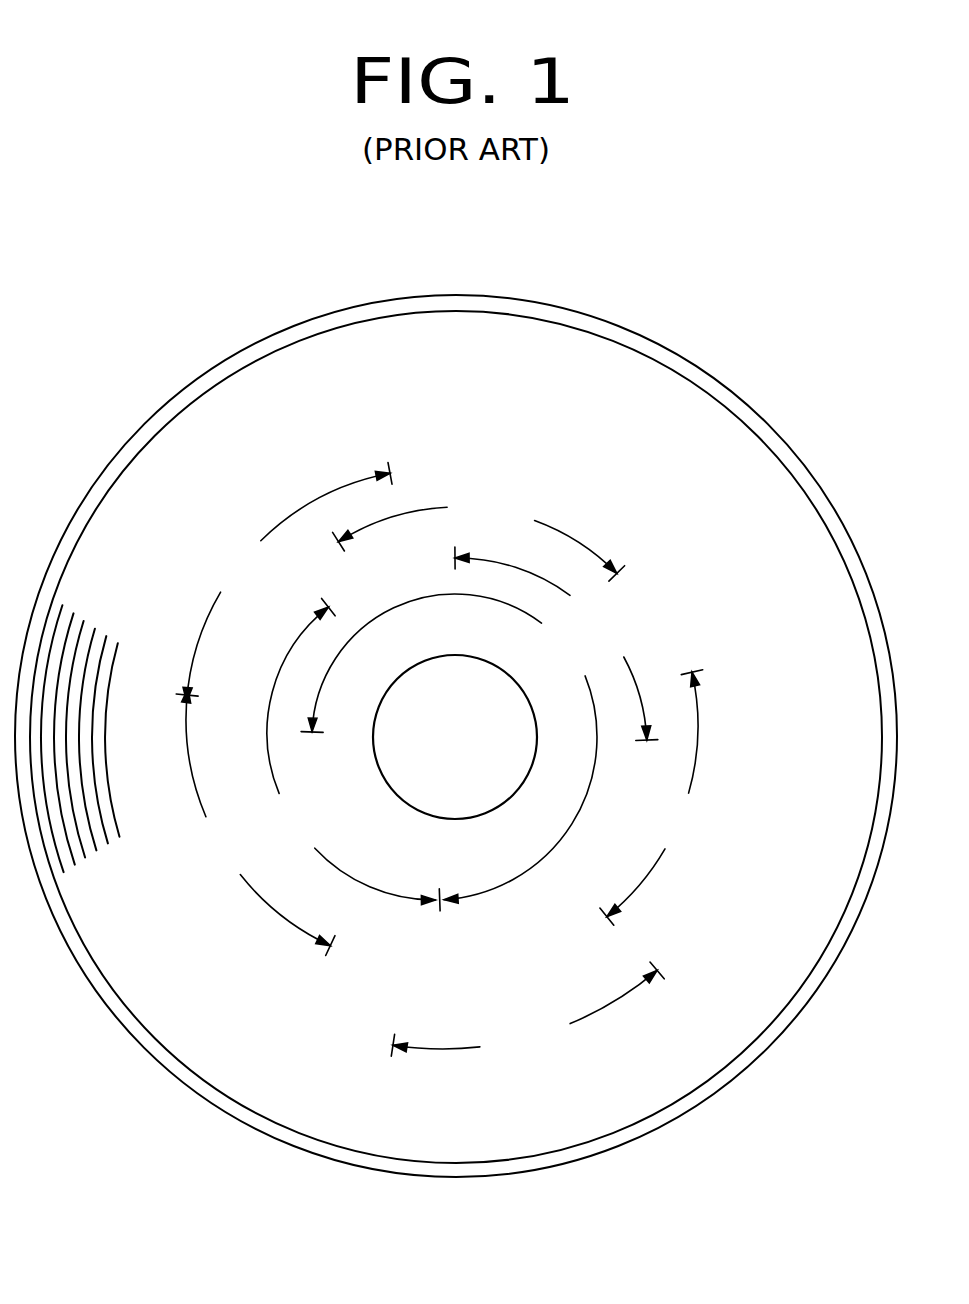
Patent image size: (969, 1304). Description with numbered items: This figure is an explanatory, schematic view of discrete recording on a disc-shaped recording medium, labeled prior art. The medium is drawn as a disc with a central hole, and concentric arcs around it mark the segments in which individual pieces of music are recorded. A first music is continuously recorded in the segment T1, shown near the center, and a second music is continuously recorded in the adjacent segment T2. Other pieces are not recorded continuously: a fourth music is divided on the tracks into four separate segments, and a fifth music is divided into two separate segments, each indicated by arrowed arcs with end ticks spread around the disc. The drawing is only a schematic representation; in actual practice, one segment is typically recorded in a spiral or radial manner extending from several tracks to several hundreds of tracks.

The segment T1 is at (436, 706).
The segment T2 is at (435, 793).